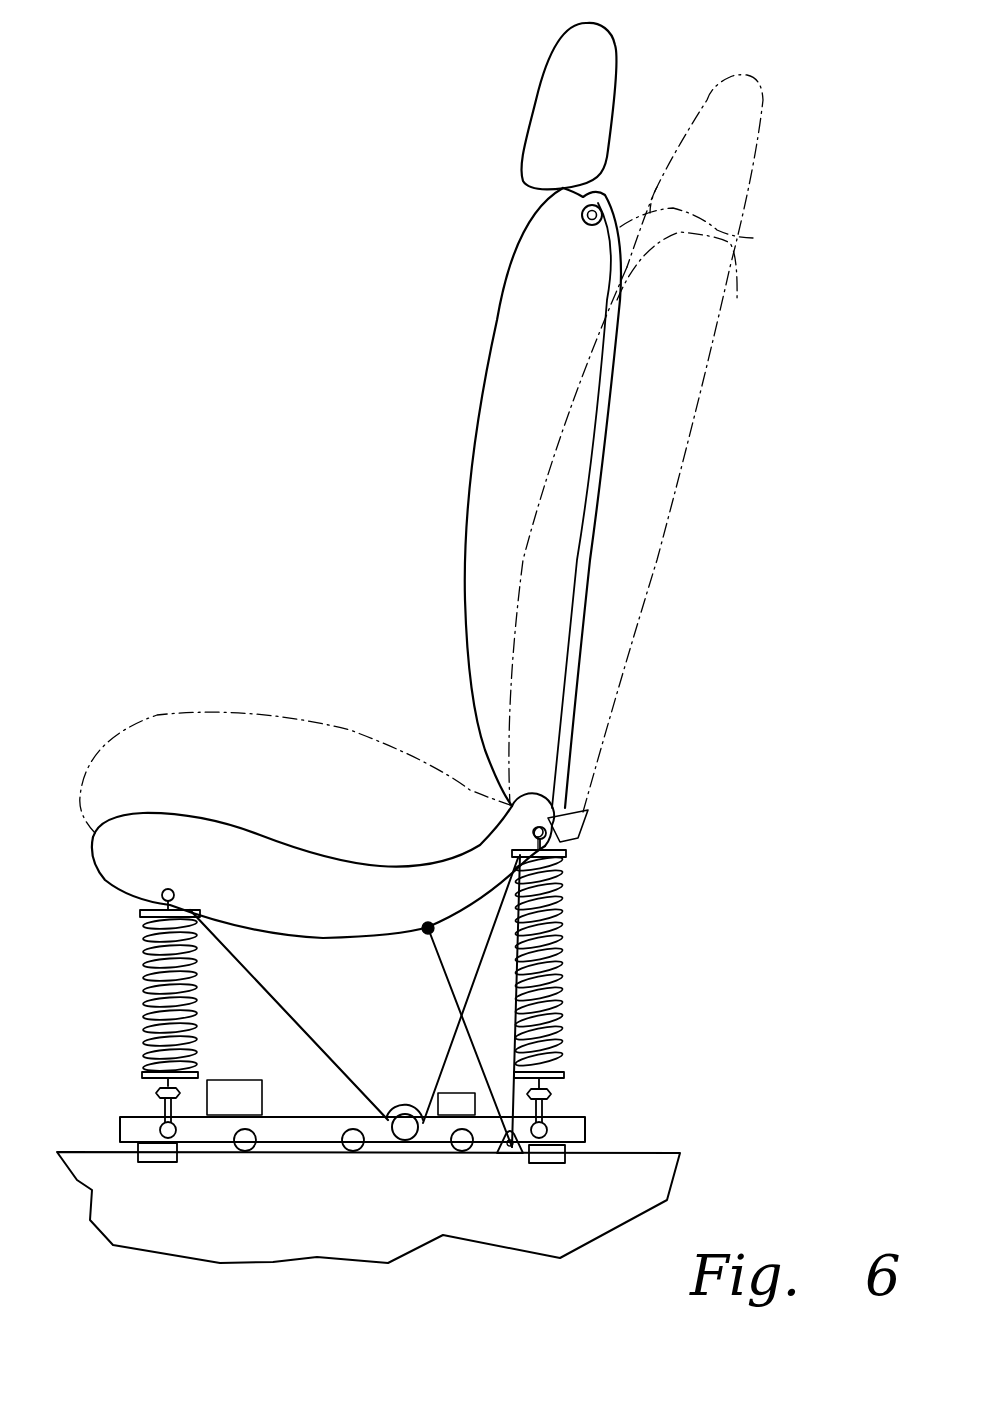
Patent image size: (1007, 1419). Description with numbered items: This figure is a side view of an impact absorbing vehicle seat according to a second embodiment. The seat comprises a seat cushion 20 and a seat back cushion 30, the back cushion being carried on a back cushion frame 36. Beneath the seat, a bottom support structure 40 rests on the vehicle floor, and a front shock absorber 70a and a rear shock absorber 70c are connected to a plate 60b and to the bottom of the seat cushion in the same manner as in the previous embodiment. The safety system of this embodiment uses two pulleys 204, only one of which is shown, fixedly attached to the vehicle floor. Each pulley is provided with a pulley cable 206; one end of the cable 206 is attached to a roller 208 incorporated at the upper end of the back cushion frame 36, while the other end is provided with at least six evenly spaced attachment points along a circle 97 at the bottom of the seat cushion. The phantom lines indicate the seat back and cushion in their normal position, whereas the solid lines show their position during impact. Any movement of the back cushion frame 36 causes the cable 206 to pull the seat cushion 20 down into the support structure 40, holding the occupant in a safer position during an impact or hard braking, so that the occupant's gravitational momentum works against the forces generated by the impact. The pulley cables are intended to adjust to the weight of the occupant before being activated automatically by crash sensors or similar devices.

The seat cushion 20 is at (285, 793).
The seat back cushion 30 is at (562, 332).
The back cushion frame 36 is at (738, 236).
The bottom support structure 40 is at (295, 1031).
The plate 60b is at (585, 1112).
The front shock absorber 70a is at (143, 988).
The rear shock absorber 70c is at (565, 935).
The circle 97 is at (426, 932).
The pulley 204 is at (512, 1154).
The pulley cable 206 is at (548, 818).
The roller 208 is at (598, 203).